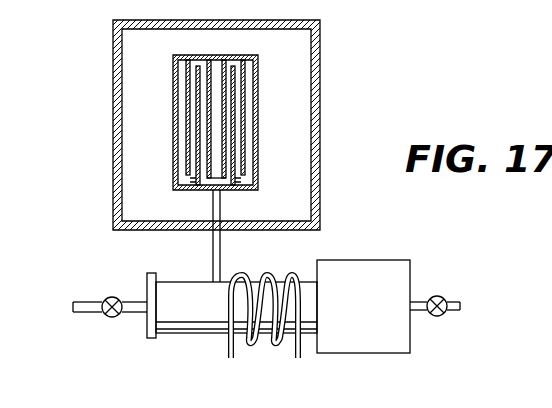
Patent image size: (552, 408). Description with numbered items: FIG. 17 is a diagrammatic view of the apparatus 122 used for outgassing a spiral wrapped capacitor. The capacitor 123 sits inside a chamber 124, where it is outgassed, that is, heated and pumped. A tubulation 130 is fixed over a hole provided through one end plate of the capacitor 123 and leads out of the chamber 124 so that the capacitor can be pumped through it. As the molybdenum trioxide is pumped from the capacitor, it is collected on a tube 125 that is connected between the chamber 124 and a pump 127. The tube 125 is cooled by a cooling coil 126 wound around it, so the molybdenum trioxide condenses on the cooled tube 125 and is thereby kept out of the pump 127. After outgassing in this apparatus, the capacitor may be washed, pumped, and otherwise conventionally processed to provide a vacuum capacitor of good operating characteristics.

The outgassing apparatus 122 is at (98, 225).
The capacitor 123 is at (282, 87).
The chamber 124 is at (114, 159).
The tube 125 is at (175, 332).
The cooling coil 126 is at (229, 351).
The pump 127 is at (370, 356).
The tubulation 130 is at (217, 208).